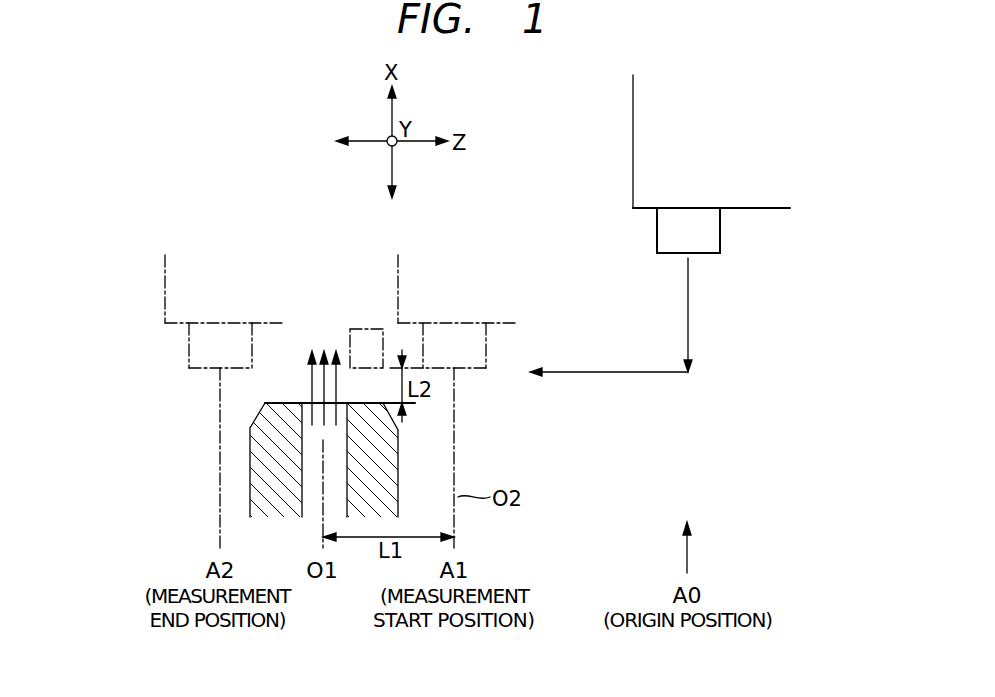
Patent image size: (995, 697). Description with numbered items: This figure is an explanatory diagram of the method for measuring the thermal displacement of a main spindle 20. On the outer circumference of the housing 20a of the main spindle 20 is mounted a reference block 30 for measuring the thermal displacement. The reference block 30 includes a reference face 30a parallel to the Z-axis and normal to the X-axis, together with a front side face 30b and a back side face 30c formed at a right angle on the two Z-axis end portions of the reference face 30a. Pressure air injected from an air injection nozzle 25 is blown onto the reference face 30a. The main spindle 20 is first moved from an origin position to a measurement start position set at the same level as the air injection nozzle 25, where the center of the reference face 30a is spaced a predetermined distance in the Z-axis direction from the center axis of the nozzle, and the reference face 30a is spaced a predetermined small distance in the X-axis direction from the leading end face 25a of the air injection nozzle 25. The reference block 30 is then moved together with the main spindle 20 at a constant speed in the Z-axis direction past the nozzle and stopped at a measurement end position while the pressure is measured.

The main spindle 20 is at (628, 176).
The housing 20a is at (770, 205).
The air injection nozzle 25 is at (249, 478).
The leading end face 25a is at (288, 402).
The reference block 30 is at (702, 252).
The reference face 30a is at (200, 371).
The front side face 30b is at (188, 350).
The back side face 30c is at (253, 355).